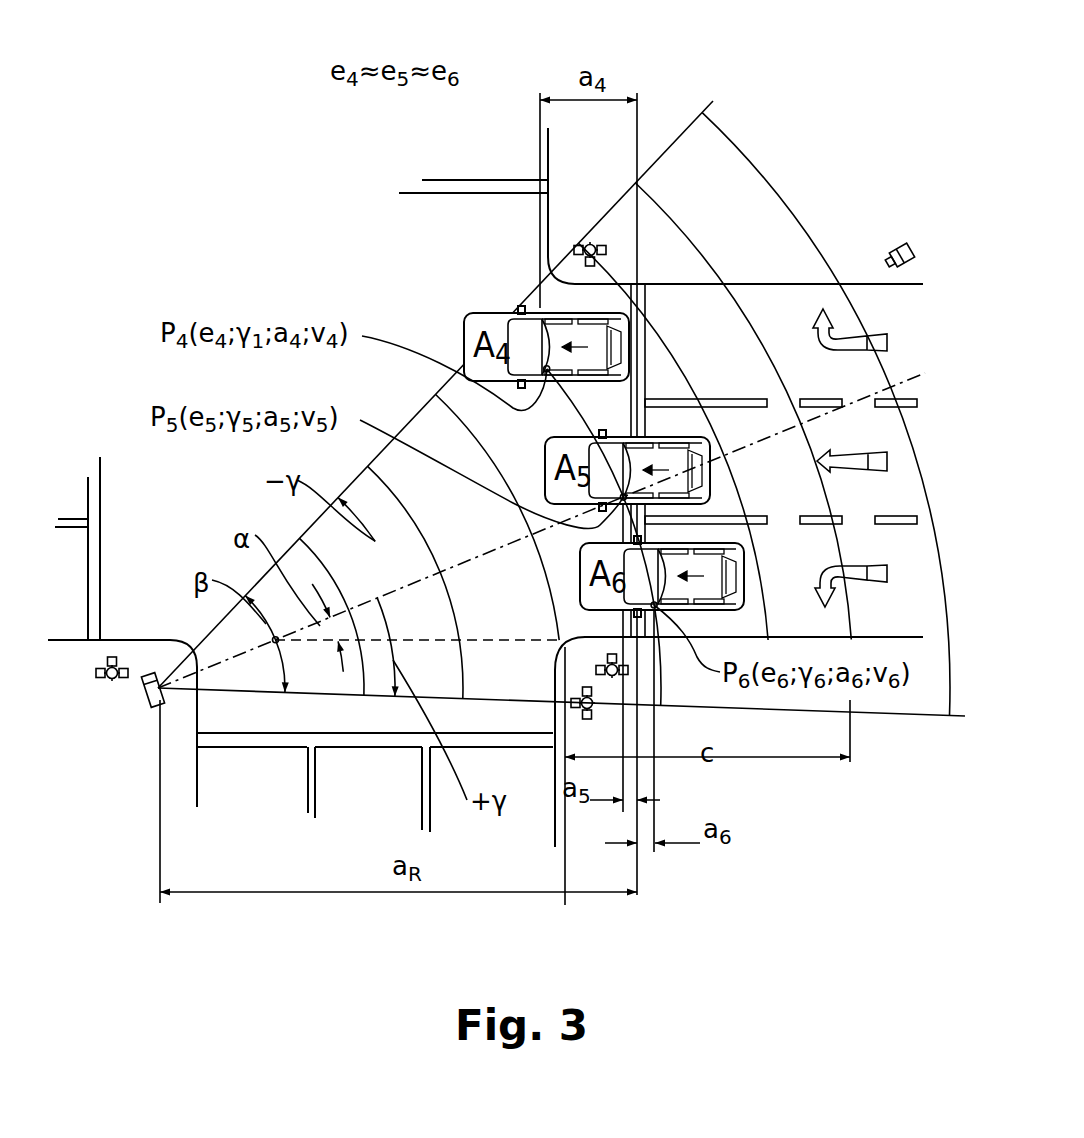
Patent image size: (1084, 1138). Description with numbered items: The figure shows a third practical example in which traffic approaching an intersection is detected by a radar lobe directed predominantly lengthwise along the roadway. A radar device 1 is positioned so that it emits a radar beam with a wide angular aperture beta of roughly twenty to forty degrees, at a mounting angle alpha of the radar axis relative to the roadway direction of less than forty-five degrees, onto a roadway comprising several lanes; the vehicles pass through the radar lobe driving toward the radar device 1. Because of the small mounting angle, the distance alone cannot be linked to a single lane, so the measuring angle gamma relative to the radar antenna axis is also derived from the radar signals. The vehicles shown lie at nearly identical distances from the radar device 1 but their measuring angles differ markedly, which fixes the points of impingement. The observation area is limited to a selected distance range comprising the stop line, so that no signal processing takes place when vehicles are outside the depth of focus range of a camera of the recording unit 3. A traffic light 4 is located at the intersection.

The radar device 1 is at (150, 703).
The recording unit 3 is at (897, 243).
The traffic light 4 is at (590, 242).